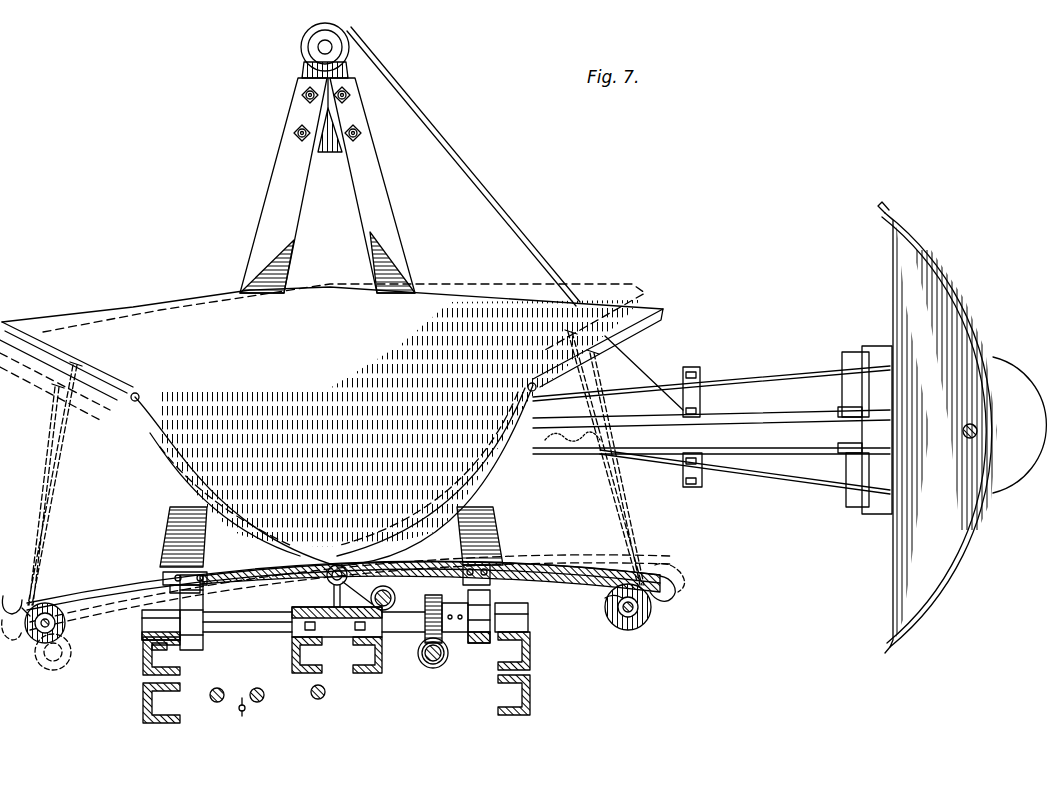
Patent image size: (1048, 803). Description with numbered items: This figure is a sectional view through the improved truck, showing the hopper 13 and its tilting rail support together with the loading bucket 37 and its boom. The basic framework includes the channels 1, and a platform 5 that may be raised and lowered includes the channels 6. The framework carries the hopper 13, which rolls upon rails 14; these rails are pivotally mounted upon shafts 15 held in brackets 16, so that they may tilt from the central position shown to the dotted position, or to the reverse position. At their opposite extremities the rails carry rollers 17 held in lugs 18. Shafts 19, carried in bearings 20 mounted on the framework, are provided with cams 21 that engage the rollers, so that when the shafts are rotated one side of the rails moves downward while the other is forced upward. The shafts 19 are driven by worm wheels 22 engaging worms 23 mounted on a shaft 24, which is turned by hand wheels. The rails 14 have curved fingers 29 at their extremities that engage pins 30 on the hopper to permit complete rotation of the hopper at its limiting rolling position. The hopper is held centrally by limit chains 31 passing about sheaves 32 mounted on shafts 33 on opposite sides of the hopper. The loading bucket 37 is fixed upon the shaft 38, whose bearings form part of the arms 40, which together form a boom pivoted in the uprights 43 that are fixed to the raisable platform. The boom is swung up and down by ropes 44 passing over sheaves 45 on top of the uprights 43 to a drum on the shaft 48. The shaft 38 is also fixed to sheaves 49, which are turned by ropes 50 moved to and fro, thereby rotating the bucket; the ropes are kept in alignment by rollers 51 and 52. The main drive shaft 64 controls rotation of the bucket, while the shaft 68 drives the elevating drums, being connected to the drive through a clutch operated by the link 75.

The channels 1 is at (145, 702).
The platform 5 is at (300, 630).
The channels 6 is at (168, 668).
The hopper 13 is at (202, 320).
The rails 14 is at (88, 582).
The shafts 15 is at (326, 580).
The brackets 16 is at (320, 604).
The rollers 17 is at (168, 573).
The lugs 18 is at (188, 573).
The shafts 19 is at (244, 620).
The bearings 20 is at (143, 625).
The cams 21 is at (204, 644).
The worm wheels 22 is at (430, 604).
The worms 23 is at (425, 658).
The shaft 24 is at (440, 662).
The curved fingers 29 is at (676, 590).
The pins 30 is at (132, 399).
The limit chains 31 is at (47, 503).
The sheaves 32 is at (35, 643).
The shafts 33 is at (66, 627).
The loading bucket 37 is at (970, 536).
The shaft 38 is at (973, 425).
The arms 40 is at (749, 424).
The uprights 43 is at (360, 175).
The ropes 44 is at (490, 200).
The sheaves 45 is at (304, 50).
The shaft 48 is at (217, 702).
The sheaves 49 is at (1008, 485).
The ropes 50 is at (794, 482).
The rollers 51 is at (700, 415).
The rollers 52 is at (870, 397).
The shaft 64 is at (318, 700).
The shaft 68 is at (257, 702).
The link 75 is at (242, 698).